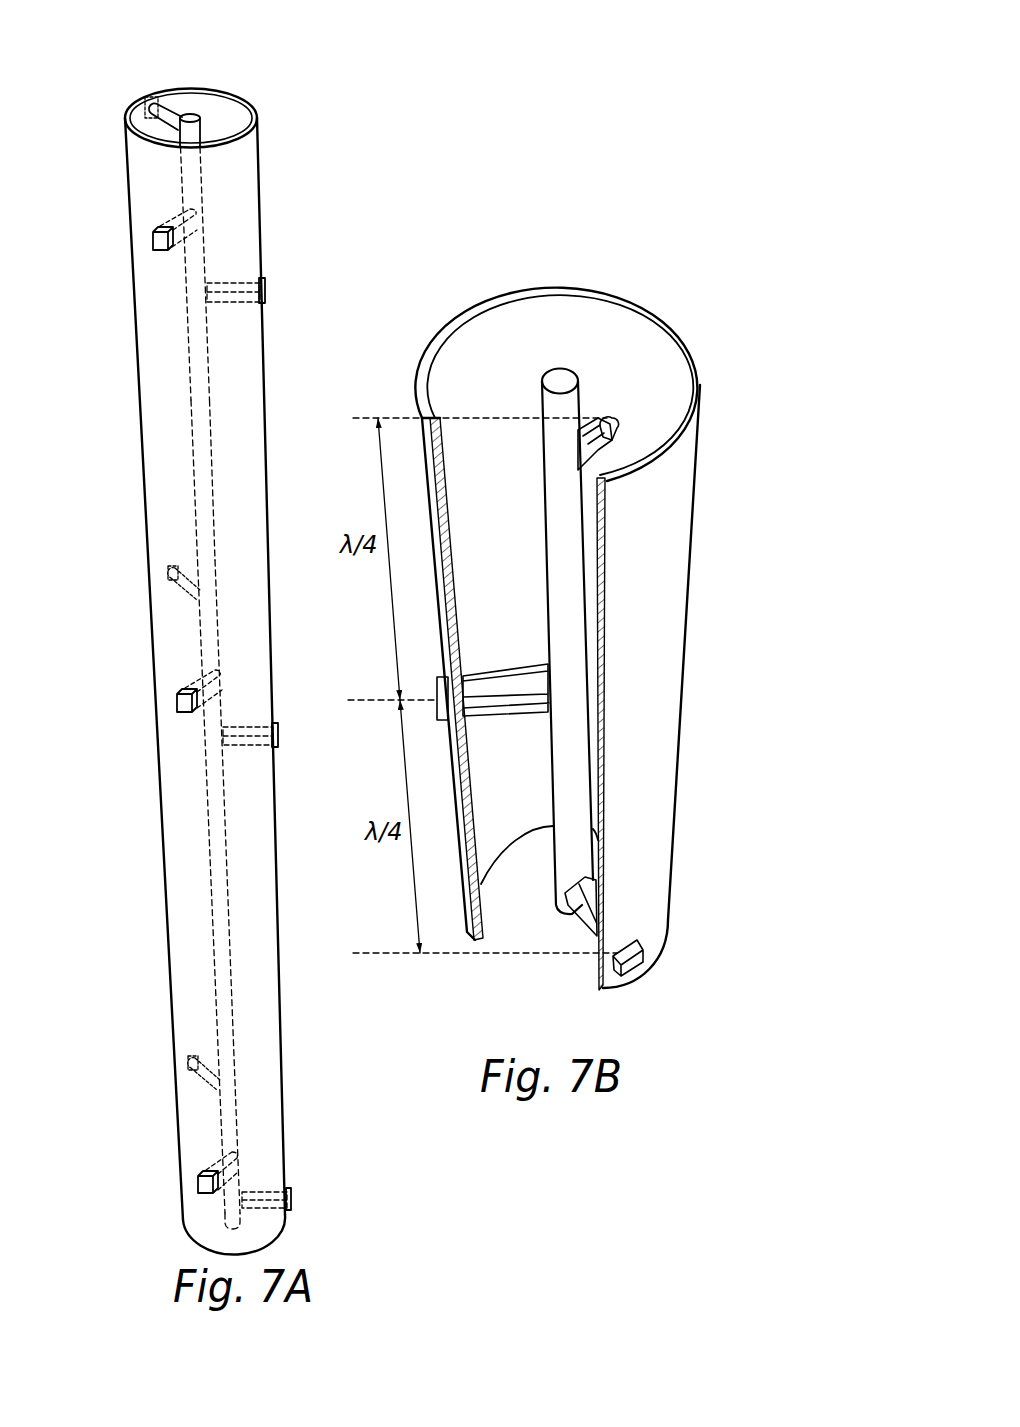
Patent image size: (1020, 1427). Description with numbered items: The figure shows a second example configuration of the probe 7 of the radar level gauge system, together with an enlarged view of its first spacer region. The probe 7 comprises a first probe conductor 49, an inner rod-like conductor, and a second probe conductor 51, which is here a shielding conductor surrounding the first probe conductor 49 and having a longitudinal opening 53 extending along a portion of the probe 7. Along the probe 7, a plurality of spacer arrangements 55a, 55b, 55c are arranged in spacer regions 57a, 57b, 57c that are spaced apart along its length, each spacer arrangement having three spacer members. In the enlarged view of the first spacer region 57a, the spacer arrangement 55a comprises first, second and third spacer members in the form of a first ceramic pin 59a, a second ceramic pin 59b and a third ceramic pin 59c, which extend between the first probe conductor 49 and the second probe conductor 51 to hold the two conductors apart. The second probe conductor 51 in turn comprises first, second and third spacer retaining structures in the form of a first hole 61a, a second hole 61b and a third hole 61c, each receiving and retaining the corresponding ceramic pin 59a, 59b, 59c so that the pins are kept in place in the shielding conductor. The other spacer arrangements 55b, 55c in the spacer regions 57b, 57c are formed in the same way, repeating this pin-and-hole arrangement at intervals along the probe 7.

In FIG. 7A, the probe 7 is at (118, 78).
In FIG. 7A, the first probe conductor 49 is at (196, 133).
In FIG. 7B, the first probe conductor 49 is at (562, 378).
In FIG. 7A, the second probe conductor 51 is at (250, 193).
In FIG. 7B, the second probe conductor 51 is at (691, 357).
In FIG. 7A, the longitudinal opening 53 is at (192, 481).
In FIG. 7A, the spacer arrangement 55a is at (175, 108).
In FIG. 7A, the spacer arrangement 55b is at (185, 542).
In FIG. 7A, the spacer arrangement 55c is at (206, 1039).
In FIG. 7A, the first spacer region 57a is at (113, 108).
In FIG. 7B, the first spacer region 57a is at (732, 596).
In FIG. 7A, the spacer region 57b is at (139, 565).
In FIG. 7A, the spacer region 57c is at (164, 1055).
In FIG. 7B, the first ceramic pin 59a is at (600, 456).
In FIG. 7B, the second ceramic pin 59b is at (593, 866).
In FIG. 7B, the third ceramic pin 59c is at (487, 681).
In FIG. 7B, the first hole 61a is at (617, 430).
In FIG. 7B, the second hole 61b is at (629, 937).
In FIG. 7B, the third hole 61c is at (438, 690).